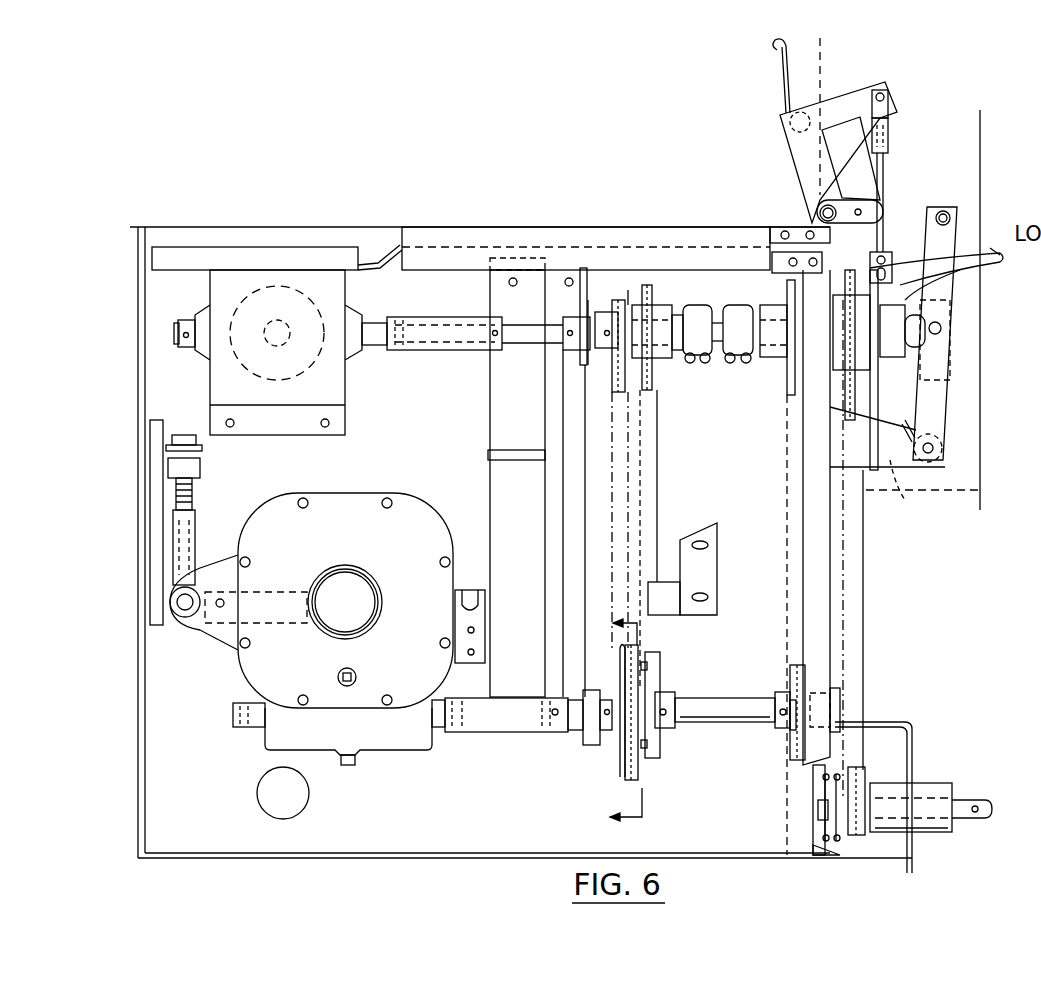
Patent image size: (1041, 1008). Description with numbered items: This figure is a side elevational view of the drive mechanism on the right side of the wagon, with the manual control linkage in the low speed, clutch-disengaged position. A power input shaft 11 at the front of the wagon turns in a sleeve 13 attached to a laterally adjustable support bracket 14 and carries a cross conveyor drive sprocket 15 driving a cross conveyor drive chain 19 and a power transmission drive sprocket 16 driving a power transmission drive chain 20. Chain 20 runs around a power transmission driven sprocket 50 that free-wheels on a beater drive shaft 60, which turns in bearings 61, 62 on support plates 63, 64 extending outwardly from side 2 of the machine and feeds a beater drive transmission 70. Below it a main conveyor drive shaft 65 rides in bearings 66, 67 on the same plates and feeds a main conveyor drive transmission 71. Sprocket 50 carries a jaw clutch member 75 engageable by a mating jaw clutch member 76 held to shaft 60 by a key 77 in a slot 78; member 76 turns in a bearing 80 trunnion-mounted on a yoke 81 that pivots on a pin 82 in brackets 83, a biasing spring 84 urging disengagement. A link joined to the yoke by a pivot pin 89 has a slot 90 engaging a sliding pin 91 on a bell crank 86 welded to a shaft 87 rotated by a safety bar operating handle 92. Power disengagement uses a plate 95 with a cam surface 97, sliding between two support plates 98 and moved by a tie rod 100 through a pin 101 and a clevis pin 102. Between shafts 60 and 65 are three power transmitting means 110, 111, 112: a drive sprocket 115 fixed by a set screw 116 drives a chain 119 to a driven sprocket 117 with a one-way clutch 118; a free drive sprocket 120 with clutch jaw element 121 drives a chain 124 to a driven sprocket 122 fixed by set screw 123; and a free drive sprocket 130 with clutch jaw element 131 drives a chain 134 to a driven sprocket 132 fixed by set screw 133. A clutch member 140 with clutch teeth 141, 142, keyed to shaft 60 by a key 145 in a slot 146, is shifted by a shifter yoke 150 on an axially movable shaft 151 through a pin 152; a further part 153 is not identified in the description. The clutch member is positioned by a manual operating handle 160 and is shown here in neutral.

The side of the machine 2 is at (430, 818).
The power input shaft 11 is at (1010, 810).
The sleeve 13 is at (930, 783).
The laterally adjustable support bracket 14 is at (914, 726).
The cross conveyor drive sprocket 15 is at (828, 830).
The power transmission drive sprocket 16 is at (858, 838).
The cross conveyor drive chain 19 is at (822, 782).
The power transmission drive chain 20 is at (850, 570).
The power transmission driven sprocket 50 is at (846, 405).
The beater drive shaft 60 is at (522, 350).
The bearing 61 is at (565, 322).
The bearing 62 is at (790, 392).
The support plate 63 is at (545, 498).
The support plate 64 is at (832, 520).
The main conveyor drive shaft 65 is at (707, 698).
The bearing 66 is at (585, 740).
The bearing 67 is at (835, 690).
The beater drive transmission 70 is at (298, 406).
The main conveyor drive transmission 71 is at (331, 535).
The jaw clutch member 75 is at (960, 268).
The mating jaw clutch member 76 is at (920, 390).
The key 77 is at (948, 296).
The slot 78 is at (945, 312).
The bearing 80 is at (948, 366).
The yoke 81 is at (960, 232).
The pin 82 is at (942, 449).
The brackets 83 is at (928, 462).
The biasing spring 84 is at (942, 424).
The bell crank 86 is at (830, 150).
The shaft 87 is at (780, 118).
The pivot pin 89 is at (943, 212).
The slot 90 is at (858, 208).
The sliding pin 91 is at (822, 208).
The safety bar operating handle 92 is at (784, 55).
The plate 95 is at (876, 406).
The cam surface 97 is at (880, 362).
The support plates 98 is at (906, 498).
The tie rod 100 is at (884, 162).
The pin 101 is at (886, 258).
The clevis pin 102 is at (886, 94).
The power transmitting means 110 is at (608, 528).
The power transmitting means 111 is at (785, 489).
The power transmitting means 112 is at (662, 518).
The drive sprocket 115 is at (590, 298).
The set screw 116 is at (583, 295).
The driven sprocket 117 is at (622, 660).
The overrunning or one-way clutch 118 is at (607, 766).
The drive chain 119 is at (612, 378).
The drive sprocket 120 is at (772, 360).
The clutch jaw element 121 is at (766, 302).
The driven sprocket 122 is at (792, 732).
The set screw 123 is at (780, 718).
The drive chain 124 is at (806, 668).
The drive sprocket 130 is at (608, 312).
The clutch jaw element 131 is at (655, 358).
The driven sprocket 132 is at (680, 813).
The set screw 133 is at (668, 717).
The drive chain 134 is at (655, 392).
The clutch member 140 is at (692, 305).
The clutch teeth 141 is at (692, 362).
The clutch teeth 142 is at (742, 357).
The key 145 is at (698, 305).
The slot 146 is at (716, 345).
The shifter yoke 150 is at (718, 300).
The axially movable shaft 151 is at (630, 300).
The pin 152 is at (735, 305).
The spring 153 is at (647, 290).
The manual operating handle 160 is at (992, 248).